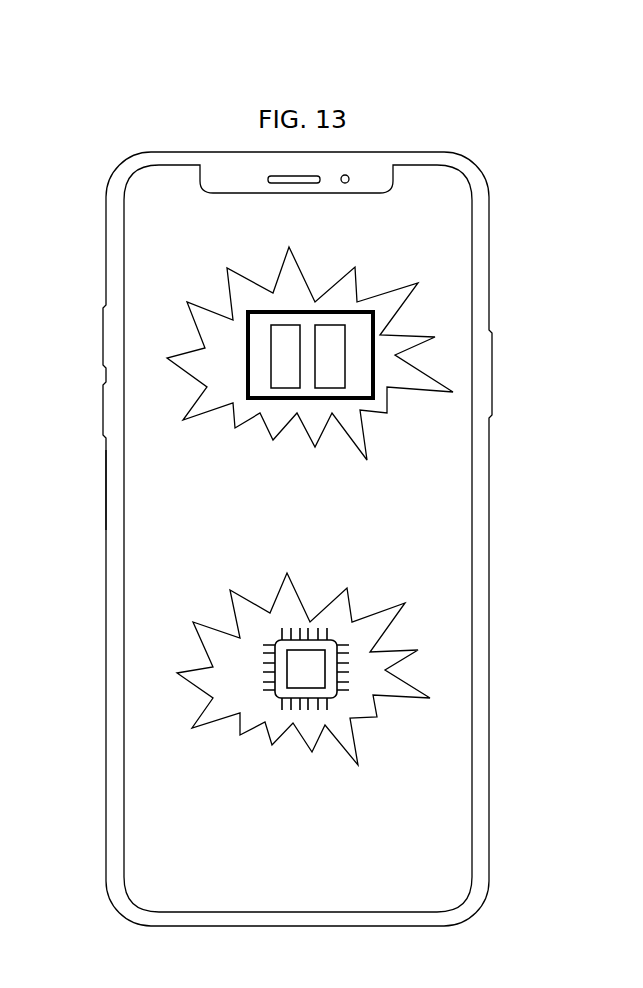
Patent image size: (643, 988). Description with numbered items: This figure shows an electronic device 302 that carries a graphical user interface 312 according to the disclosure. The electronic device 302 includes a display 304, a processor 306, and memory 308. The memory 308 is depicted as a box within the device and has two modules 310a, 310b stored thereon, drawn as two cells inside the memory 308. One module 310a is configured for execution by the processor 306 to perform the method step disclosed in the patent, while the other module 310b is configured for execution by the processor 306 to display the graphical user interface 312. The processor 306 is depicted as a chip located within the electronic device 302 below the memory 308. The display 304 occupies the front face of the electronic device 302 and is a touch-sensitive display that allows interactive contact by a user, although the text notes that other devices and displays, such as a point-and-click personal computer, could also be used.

The electronic device 302 is at (0, 47).
The display 304 is at (186, 806).
The processor 306 is at (315, 669).
The memory 308 is at (360, 325).
The module 310a is at (278, 357).
The module 310b is at (335, 384).
The graphical user interface 312 is at (0, 487).